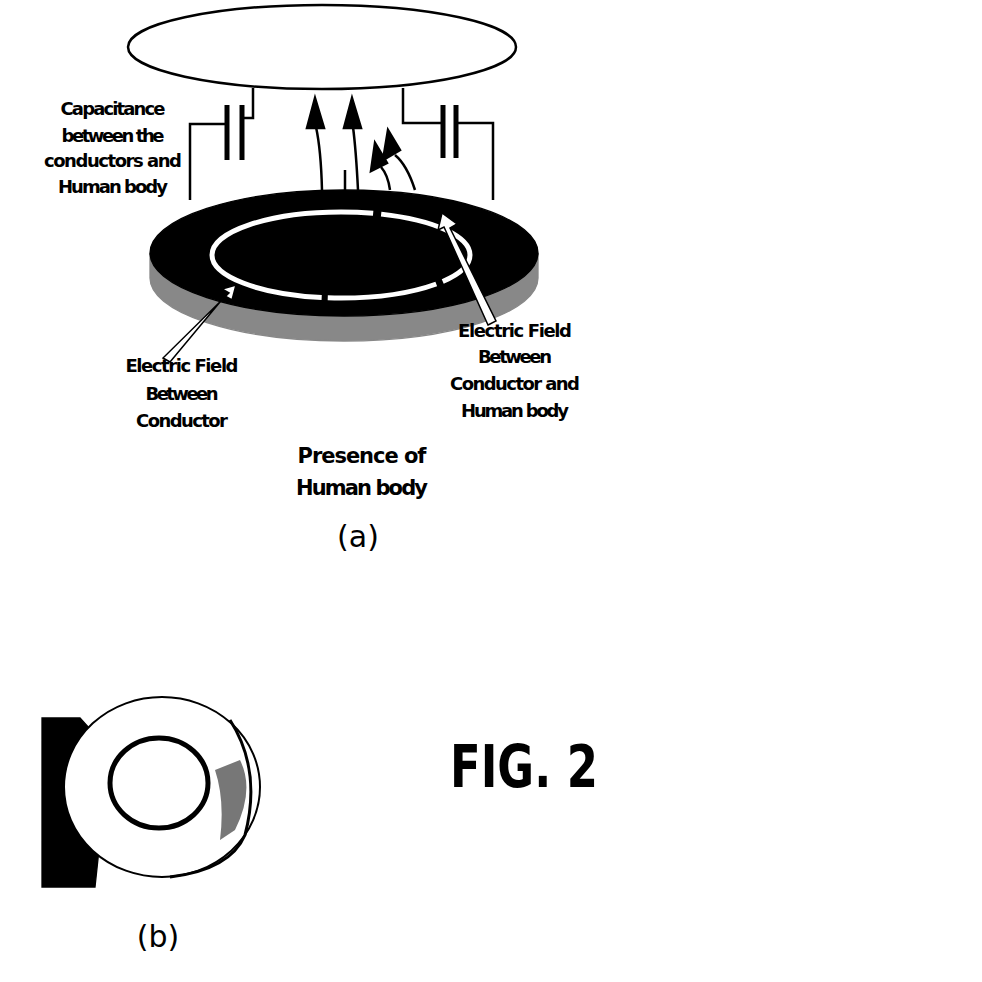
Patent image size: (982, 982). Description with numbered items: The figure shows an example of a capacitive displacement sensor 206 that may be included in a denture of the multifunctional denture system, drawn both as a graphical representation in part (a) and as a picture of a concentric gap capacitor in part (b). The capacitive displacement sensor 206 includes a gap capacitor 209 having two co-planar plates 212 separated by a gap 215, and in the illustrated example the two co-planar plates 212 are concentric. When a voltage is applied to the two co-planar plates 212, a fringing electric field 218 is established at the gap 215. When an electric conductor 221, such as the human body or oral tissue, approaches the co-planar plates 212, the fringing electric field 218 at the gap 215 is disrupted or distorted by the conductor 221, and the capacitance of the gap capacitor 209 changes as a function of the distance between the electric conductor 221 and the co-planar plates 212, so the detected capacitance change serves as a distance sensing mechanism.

The capacitive displacement sensor 206 is at (567, 48).
The gap capacitor 209 is at (510, 177).
The co-planar plates 212 is at (291, 195).
The gap 215 is at (328, 315).
The fringing electric field 218 is at (151, 263).
The electric conductor 221 is at (440, 57).